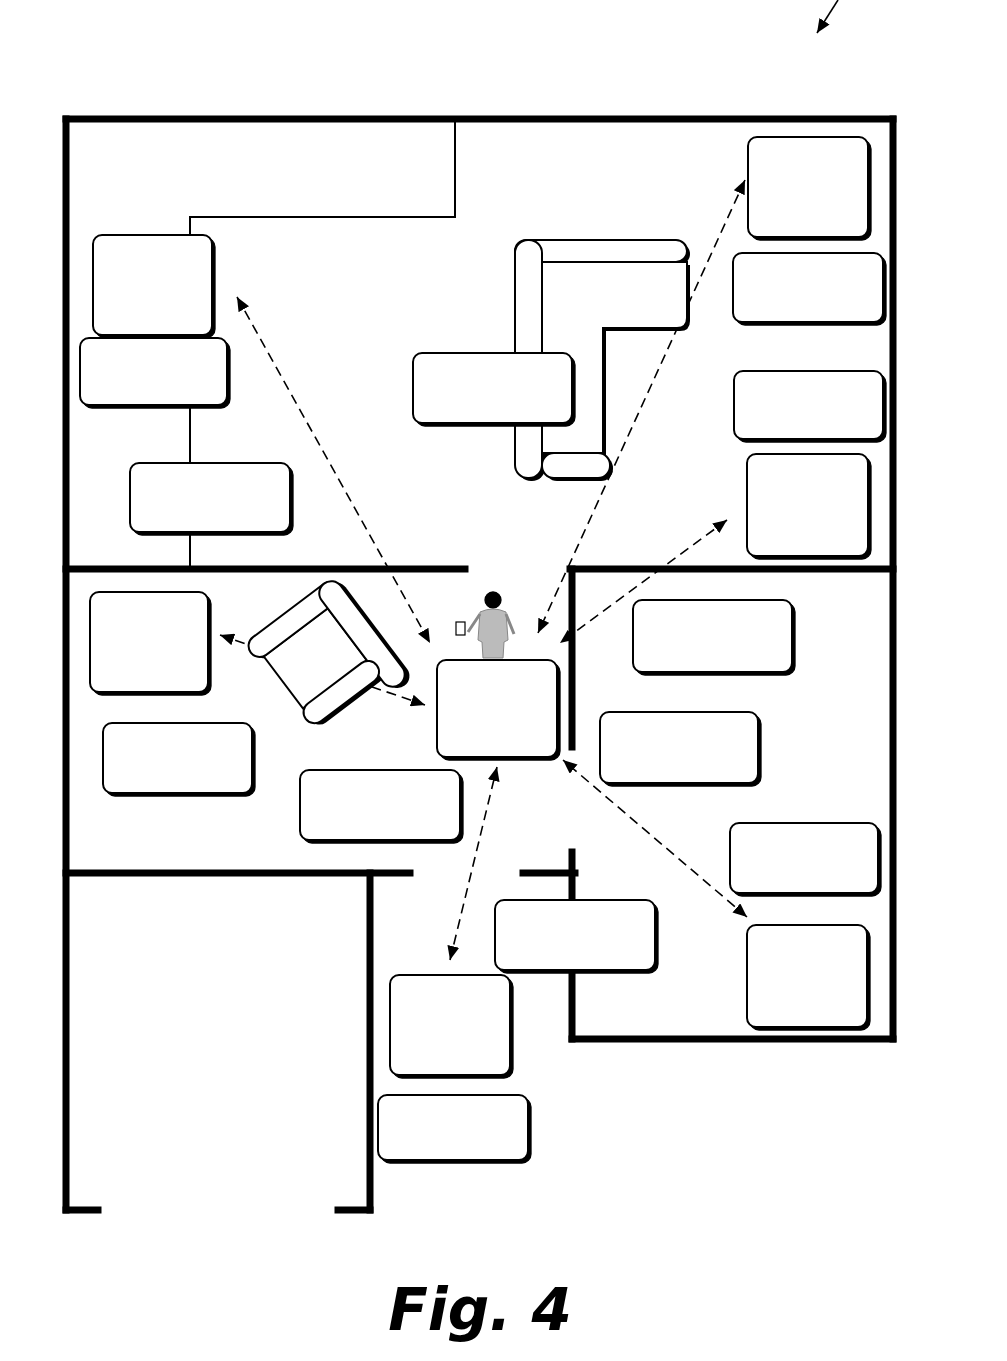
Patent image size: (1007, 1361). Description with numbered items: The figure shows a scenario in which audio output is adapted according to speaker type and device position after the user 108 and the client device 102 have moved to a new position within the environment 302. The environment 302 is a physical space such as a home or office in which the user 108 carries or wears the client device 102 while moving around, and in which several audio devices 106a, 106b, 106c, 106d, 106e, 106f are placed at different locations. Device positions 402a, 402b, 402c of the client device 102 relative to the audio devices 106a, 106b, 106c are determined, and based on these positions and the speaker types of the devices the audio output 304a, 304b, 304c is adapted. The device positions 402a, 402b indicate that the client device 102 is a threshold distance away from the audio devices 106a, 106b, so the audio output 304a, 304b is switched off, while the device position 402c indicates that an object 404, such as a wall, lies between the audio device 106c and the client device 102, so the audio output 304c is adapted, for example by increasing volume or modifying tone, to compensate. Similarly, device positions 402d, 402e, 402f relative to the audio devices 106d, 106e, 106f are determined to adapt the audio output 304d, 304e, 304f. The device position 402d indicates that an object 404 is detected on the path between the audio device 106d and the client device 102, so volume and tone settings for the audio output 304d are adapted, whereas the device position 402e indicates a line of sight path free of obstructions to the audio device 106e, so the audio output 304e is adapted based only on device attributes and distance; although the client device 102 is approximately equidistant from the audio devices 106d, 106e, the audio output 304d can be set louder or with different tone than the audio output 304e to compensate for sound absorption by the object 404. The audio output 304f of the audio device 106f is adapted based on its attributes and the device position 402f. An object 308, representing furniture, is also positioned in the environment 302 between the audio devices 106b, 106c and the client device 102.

The environment 302 is at (210, 117).
The client device 102 is at (498, 710).
The user 108 is at (502, 624).
The audio device 106a is at (154, 286).
The audio device 106b is at (809, 188).
The audio device 106c is at (809, 506).
The audio device 106d is at (150, 643).
The audio device 106e is at (451, 1026).
The audio device 106f is at (808, 977).
The audio output 304a is at (155, 373).
The audio output 304b is at (809, 289).
The audio output 304c is at (810, 406).
The audio output 304d is at (179, 759).
The audio output 304e is at (454, 1129).
The audio output 304f is at (805, 859).
The device position 402a is at (347, 493).
The device position 402b is at (495, 562).
The device position 402c is at (725, 548).
The device position 402d is at (372, 703).
The device position 402e is at (470, 887).
The device position 402f is at (647, 825).
The object 308 is at (602, 360).
The object 404 is at (568, 612).